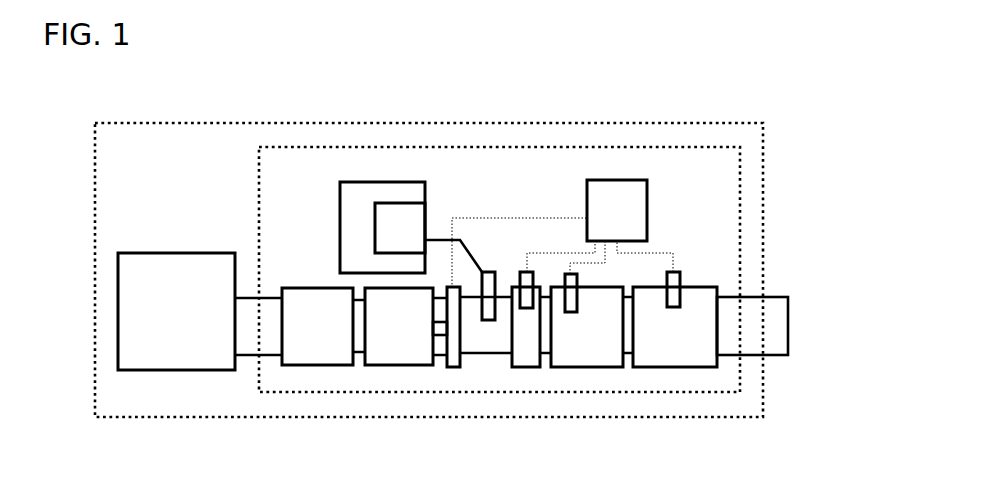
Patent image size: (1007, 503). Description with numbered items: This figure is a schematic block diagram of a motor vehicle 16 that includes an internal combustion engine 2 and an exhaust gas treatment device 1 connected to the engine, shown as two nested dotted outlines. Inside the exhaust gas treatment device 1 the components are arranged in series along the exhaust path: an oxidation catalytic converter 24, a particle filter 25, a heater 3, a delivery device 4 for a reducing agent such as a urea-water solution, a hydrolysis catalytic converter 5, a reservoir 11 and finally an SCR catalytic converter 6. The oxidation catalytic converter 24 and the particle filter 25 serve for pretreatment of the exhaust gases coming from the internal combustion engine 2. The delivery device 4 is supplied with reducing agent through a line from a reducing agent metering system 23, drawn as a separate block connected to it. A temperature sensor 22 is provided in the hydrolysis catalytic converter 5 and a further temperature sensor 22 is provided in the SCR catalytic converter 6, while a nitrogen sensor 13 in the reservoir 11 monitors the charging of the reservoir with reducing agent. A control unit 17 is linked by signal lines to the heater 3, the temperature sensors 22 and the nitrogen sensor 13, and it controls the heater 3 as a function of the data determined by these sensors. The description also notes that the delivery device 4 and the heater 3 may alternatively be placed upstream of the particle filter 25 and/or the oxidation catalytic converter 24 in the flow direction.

The exhaust gas treatment device 1 is at (717, 146).
The internal combustion engine 2 is at (120, 370).
The heater 3 is at (452, 367).
The delivery device 4 is at (488, 272).
The hydrolysis catalytic converter 5 is at (530, 367).
The SCR catalytic converter 6 is at (650, 367).
The reservoir 11 is at (592, 367).
The nitrogen sensor 13 is at (568, 274).
The motor vehicle 16 is at (763, 123).
The control unit 17 is at (647, 203).
The temperature sensor 22 is at (528, 272).
The reducing agent metering system 23 is at (350, 182).
The oxidation catalytic converter 24 is at (318, 367).
The particle filter 25 is at (390, 367).